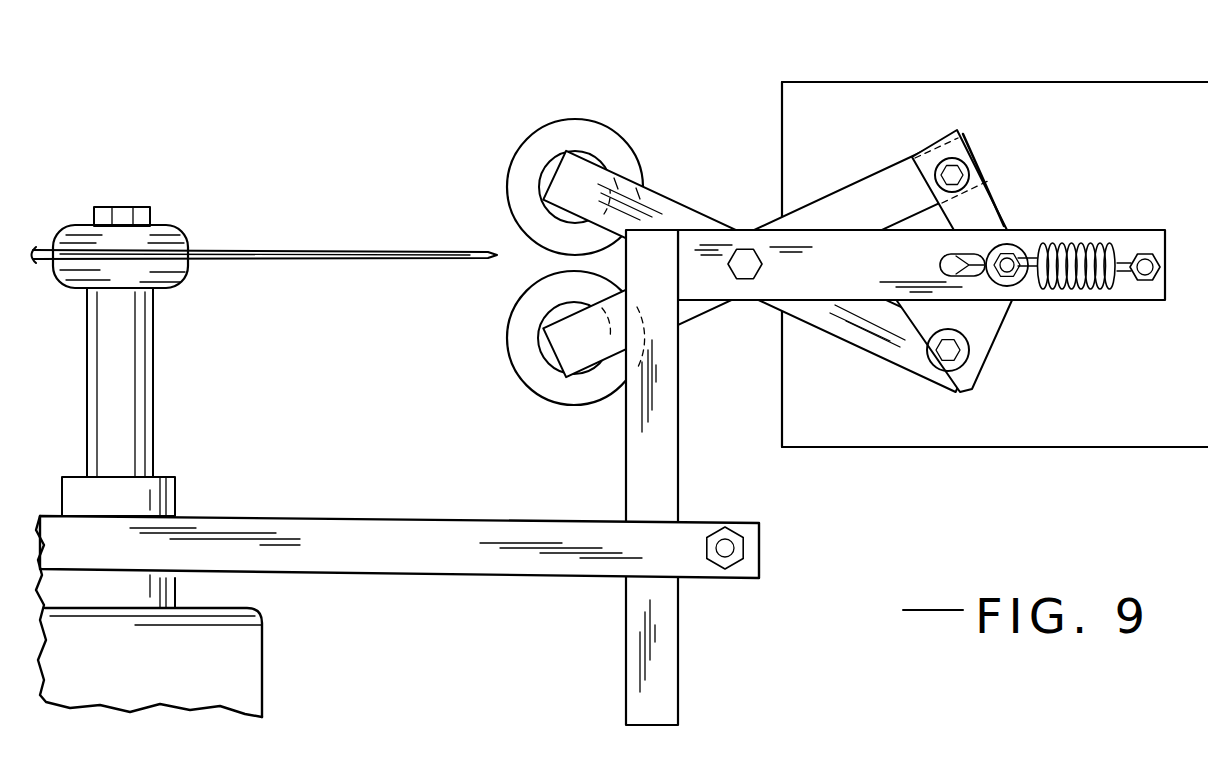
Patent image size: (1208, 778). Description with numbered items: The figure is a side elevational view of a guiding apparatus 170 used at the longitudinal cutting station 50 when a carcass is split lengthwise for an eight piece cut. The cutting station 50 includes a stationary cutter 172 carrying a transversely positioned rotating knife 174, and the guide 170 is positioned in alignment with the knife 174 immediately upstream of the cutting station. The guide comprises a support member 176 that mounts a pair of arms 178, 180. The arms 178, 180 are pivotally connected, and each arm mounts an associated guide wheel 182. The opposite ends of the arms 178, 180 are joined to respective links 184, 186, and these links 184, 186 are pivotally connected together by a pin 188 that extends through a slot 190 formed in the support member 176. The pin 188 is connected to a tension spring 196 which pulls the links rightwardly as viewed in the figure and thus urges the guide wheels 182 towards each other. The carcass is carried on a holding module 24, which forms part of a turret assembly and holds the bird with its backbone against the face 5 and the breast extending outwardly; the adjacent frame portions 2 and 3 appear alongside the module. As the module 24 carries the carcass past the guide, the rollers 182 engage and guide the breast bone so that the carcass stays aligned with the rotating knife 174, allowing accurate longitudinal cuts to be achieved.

The frame plate side 2 is at (776, 428).
The frame plate top 3 is at (1030, 82).
The face 5 is at (1096, 432).
The holding module 24 is at (918, 470).
The longitudinal cutting station 50 is at (492, 673).
The guiding apparatus 170 is at (744, 190).
The stationary cutter 172 is at (235, 645).
The rotating knife 174 is at (315, 252).
The support member 176 is at (664, 428).
The arm 178 is at (686, 304).
The arm 180 is at (664, 200).
The guide wheel 182 is at (607, 130).
The link 184 is at (985, 212).
The link 186 is at (992, 316).
The pin 188 is at (1012, 276).
The slot 190 is at (936, 265).
The tension spring 196 is at (1084, 244).